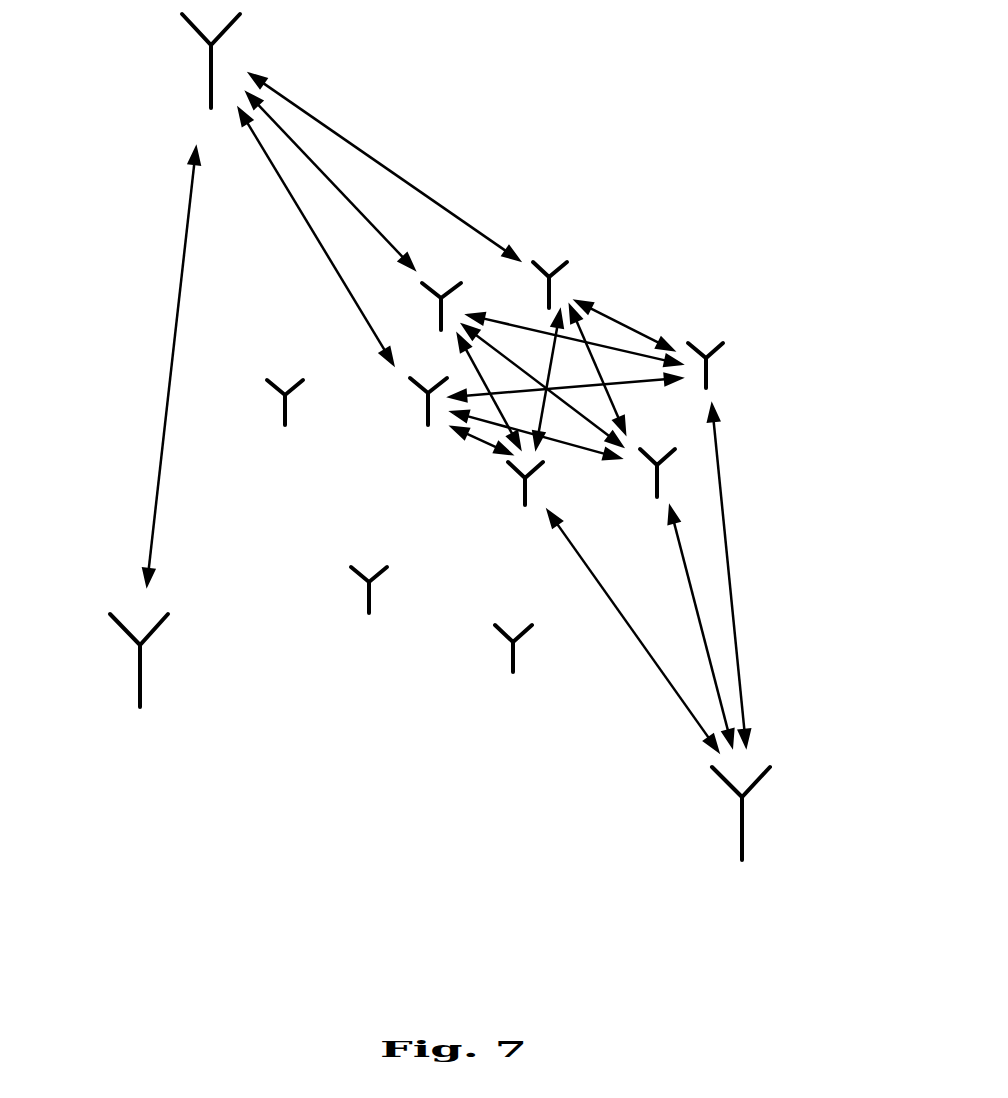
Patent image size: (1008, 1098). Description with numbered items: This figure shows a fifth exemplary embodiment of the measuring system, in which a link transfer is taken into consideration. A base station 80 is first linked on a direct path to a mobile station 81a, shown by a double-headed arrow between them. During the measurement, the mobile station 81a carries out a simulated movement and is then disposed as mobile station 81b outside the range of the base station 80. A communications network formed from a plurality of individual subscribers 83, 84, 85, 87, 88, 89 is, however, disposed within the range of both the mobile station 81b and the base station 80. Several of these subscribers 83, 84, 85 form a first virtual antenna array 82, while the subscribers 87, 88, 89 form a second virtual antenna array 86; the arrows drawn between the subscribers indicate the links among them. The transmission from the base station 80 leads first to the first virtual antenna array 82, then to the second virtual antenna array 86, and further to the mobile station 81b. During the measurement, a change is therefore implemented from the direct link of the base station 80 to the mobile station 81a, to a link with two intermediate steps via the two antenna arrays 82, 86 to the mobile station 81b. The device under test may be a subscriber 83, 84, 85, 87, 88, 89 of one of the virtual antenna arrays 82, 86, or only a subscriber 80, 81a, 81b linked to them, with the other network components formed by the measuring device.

The base station 80 is at (211, 85).
The mobile station 81a is at (138, 673).
The mobile station 81b is at (738, 825).
The first virtual antenna array 82 is at (649, 194).
The subscriber 83 is at (537, 262).
The subscriber 84 is at (453, 285).
The subscriber 85 is at (425, 416).
The second virtual antenna array 86 is at (771, 310).
The subscriber 87 is at (708, 373).
The subscriber 88 is at (657, 482).
The subscriber 89 is at (523, 495).